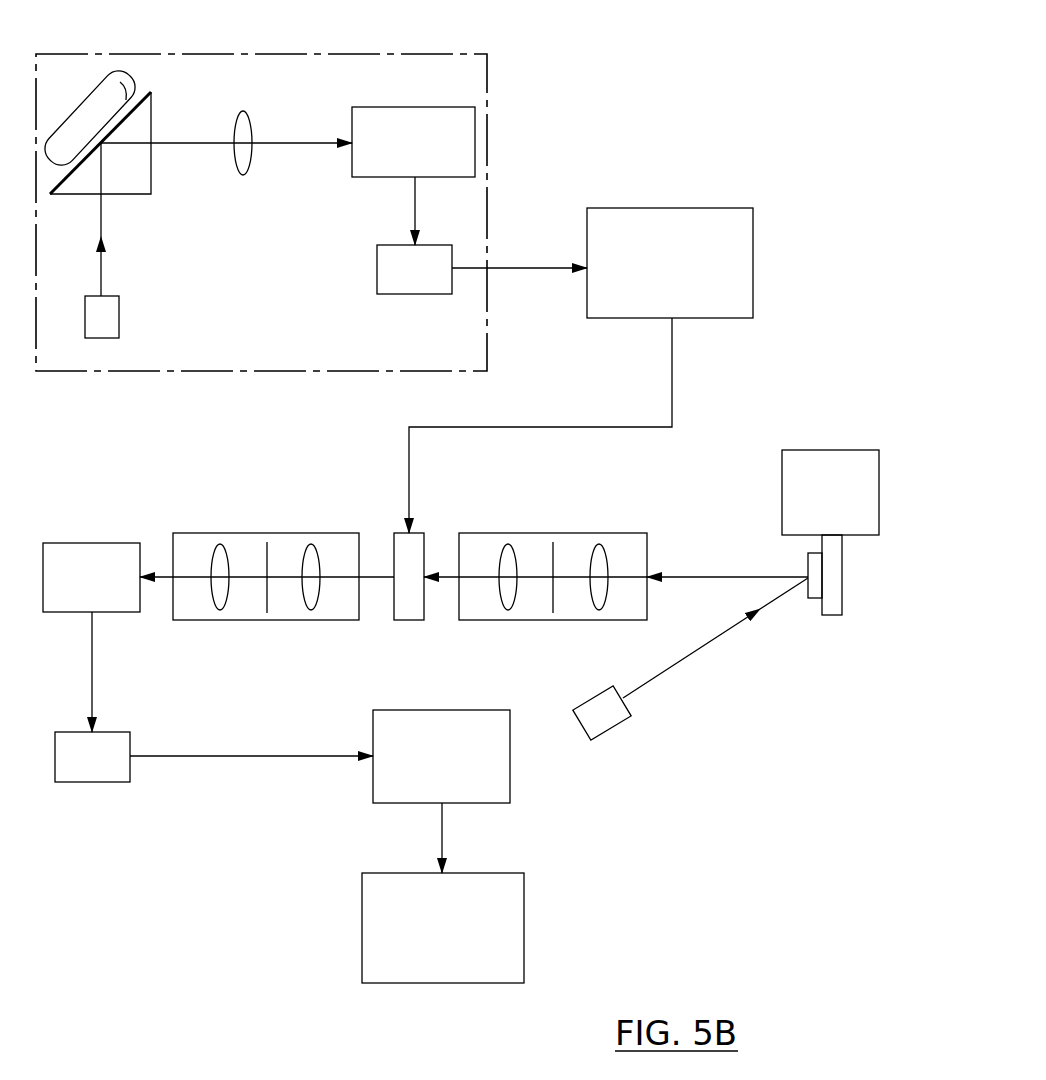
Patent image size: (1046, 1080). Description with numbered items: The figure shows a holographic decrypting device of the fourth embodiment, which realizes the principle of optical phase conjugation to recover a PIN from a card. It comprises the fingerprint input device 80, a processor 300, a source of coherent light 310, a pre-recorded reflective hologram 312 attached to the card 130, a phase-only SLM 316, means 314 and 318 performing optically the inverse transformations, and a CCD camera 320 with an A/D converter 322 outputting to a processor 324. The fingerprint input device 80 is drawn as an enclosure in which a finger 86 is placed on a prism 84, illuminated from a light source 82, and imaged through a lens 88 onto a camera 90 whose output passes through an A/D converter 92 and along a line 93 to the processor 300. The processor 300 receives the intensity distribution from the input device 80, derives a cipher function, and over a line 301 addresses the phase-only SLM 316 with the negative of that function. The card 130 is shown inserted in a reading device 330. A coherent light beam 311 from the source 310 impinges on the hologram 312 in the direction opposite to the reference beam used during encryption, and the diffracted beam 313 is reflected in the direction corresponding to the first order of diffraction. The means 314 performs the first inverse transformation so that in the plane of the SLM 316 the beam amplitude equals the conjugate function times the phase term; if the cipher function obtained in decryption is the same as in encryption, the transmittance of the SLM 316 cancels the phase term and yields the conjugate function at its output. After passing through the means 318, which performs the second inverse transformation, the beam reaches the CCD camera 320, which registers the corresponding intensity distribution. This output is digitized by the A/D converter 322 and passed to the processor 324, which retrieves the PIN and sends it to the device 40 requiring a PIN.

The fingerprint input device 80 is at (235, 53).
The finger 86 is at (85, 114).
The prism 84 is at (141, 190).
The lens 88 is at (250, 172).
The light source 82 is at (113, 322).
The camera 90 is at (428, 113).
The A/D converter 92 is at (408, 296).
The digital signal line 93 is at (550, 266).
The processor 300 is at (654, 216).
The control line 301 is at (672, 380).
The reading device 330 is at (803, 455).
The card 130 is at (836, 552).
The pre-recorded reflective hologram 312 is at (815, 598).
The diffracted beam 313 is at (708, 573).
The means performing optically the inverse transformation (T2*)^-1 314 is at (570, 533).
The phase-only SLM 316 is at (413, 617).
The means performing optically the inverse transformation (T*)^-1 318 is at (230, 533).
The CCD camera 320 is at (77, 548).
The A/D converter 322 is at (72, 772).
The processor 324 is at (378, 784).
The device requiring a PIN 40 is at (366, 911).
The source of coherent light 310 is at (618, 720).
The coherent light beam 311 is at (730, 640).